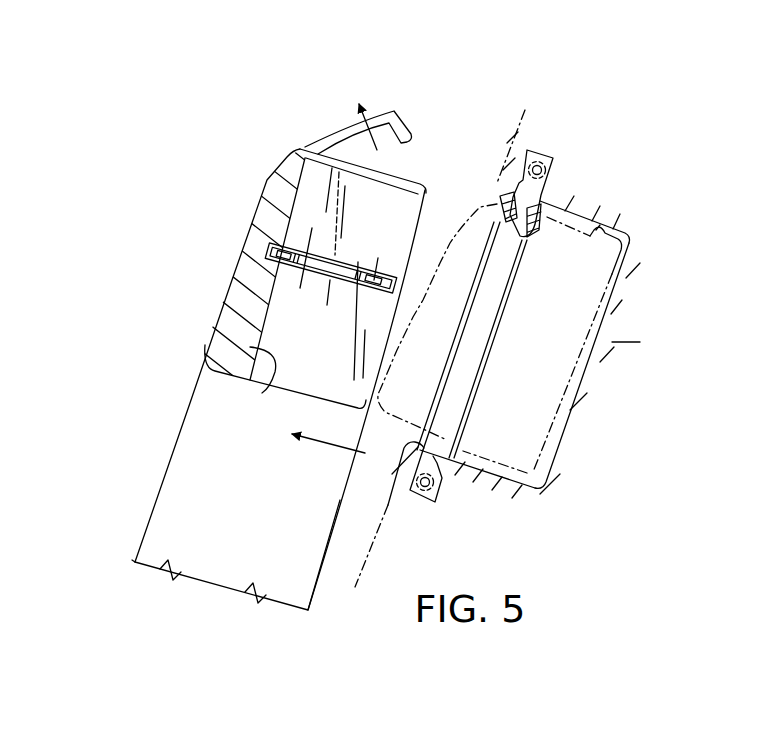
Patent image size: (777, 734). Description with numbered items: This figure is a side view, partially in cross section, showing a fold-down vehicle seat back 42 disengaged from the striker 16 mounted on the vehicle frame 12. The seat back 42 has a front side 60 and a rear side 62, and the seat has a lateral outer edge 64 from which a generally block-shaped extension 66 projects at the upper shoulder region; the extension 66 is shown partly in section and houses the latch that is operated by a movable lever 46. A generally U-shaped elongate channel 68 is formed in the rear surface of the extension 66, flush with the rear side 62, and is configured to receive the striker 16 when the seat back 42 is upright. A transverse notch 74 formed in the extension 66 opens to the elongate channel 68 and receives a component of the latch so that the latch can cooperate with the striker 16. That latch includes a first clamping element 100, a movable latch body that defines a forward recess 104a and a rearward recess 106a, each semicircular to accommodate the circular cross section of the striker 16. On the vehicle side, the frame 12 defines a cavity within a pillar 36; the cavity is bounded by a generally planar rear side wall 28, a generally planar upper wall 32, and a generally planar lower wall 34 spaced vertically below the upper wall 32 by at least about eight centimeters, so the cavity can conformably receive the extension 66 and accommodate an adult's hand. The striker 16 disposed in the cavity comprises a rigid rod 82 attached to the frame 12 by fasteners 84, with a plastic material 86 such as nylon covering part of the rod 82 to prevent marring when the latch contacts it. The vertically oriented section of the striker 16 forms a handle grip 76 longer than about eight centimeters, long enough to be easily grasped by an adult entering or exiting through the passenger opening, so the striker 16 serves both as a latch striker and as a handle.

The vehicle frame 12 is at (530, 317).
The striker 16 is at (489, 376).
The rear side wall 28 is at (605, 318).
The upper wall 32 is at (608, 226).
The lower wall 34 is at (490, 478).
The pillar 36 is at (560, 207).
The seat back 42 is at (188, 403).
The movable lever 46 is at (386, 118).
The front side 60 is at (167, 451).
The rear side 62 is at (327, 540).
The lateral outer edge 64 is at (193, 507).
The extension 66 is at (265, 207).
The elongate channel 68 is at (265, 388).
The transverse notch 74 is at (330, 268).
The handle grip 76 is at (498, 340).
The rigid rod 82 is at (528, 228).
The fasteners 84 is at (537, 163).
The plastic material 86 is at (513, 200).
The first clamping element 100 is at (343, 242).
The first recess 104a is at (277, 272).
The second recess 106a is at (375, 305).